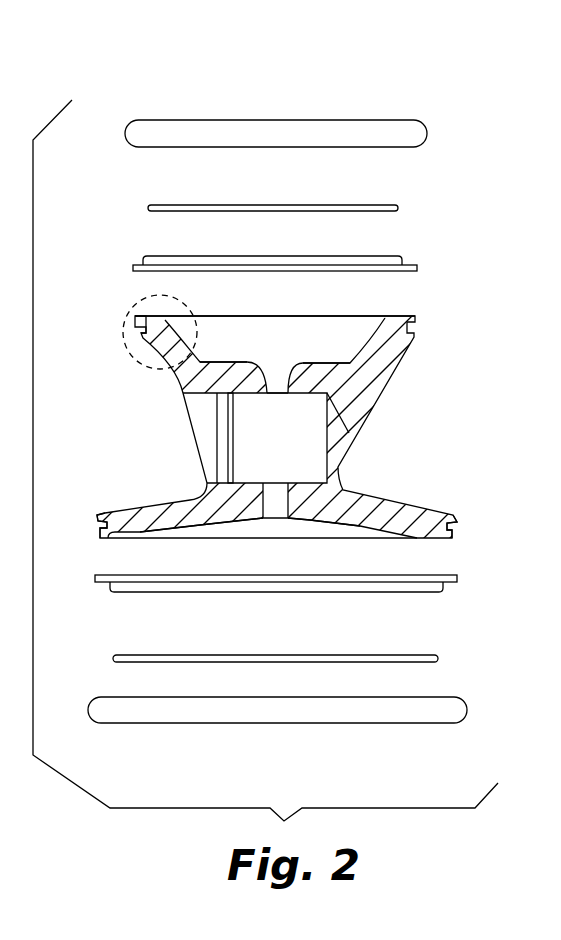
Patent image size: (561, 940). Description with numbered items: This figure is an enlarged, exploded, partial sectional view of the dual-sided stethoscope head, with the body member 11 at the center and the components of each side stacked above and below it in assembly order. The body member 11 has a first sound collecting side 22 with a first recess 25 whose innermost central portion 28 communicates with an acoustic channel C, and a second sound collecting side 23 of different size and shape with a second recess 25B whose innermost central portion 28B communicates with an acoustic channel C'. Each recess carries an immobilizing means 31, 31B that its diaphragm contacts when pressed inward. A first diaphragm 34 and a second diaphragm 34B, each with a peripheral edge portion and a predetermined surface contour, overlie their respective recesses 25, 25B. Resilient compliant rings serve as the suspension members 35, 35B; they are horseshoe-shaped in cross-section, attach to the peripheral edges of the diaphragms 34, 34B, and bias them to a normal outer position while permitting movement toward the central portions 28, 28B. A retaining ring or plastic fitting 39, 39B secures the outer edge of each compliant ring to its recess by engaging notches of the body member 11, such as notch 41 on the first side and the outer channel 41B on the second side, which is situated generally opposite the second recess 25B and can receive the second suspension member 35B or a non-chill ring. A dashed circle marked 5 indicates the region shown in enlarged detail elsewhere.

The body member 11 is at (378, 401).
The first sound collecting side 22 is at (372, 748).
The second sound collecting side 23 is at (367, 76).
The first recess 25 is at (215, 525).
The second recess 25B is at (232, 362).
The innermost central portion 28 is at (348, 527).
The innermost central portion 28B is at (338, 362).
The immobilizing means 31 is at (418, 539).
The immobilizing means 31B is at (390, 317).
The first diaphragm 34 is at (272, 654).
The second diaphragm 34B is at (269, 204).
The suspension member 35 is at (455, 592).
The second suspension member 35B is at (408, 250).
The retaining ring 39 is at (468, 703).
The retaining ring 39B is at (424, 125).
The notch 41 is at (98, 524).
The outer channel 41B is at (143, 331).
The detail area of FIG. 5 is at (125, 308).
The acoustic channel C is at (278, 482).
The acoustic channel C' is at (280, 405).